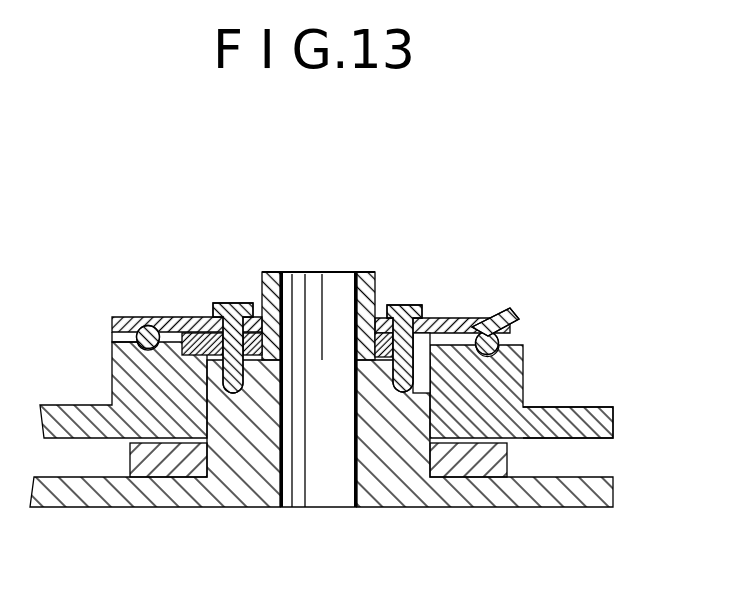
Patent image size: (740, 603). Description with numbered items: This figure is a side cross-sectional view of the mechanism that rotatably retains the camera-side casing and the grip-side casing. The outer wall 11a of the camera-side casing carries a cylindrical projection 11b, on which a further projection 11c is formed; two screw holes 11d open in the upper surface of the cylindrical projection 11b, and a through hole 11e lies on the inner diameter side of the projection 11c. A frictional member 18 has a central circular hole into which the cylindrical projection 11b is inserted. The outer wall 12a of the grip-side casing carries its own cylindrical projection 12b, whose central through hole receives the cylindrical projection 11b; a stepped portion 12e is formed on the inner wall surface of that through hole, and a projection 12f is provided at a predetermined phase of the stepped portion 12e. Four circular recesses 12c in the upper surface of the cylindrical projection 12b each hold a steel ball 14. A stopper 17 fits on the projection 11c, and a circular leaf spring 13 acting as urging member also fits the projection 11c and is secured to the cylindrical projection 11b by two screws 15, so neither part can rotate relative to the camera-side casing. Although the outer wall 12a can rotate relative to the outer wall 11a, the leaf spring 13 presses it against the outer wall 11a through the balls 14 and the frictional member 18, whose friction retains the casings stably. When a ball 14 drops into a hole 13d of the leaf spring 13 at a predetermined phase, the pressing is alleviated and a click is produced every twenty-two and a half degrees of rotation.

The outer wall of the camera-side casing 11a is at (251, 497).
The cylindrical projection 11b is at (215, 398).
The projection 11c is at (272, 283).
The screw hole 11d is at (248, 393).
The through hole 11e is at (335, 472).
The outer wall of the grip-side casing 12a is at (603, 423).
The cylindrical projection 12b is at (497, 372).
The circular recess 12c is at (125, 317).
The stepped portion 12e is at (112, 358).
The projection 12f is at (445, 318).
The leaf spring 13 is at (521, 322).
The hole of the leaf spring 13d is at (153, 318).
The steel ball 14 is at (484, 333).
The screw 15 is at (403, 305).
The stopper 17 is at (192, 317).
The frictional member 18 is at (492, 463).